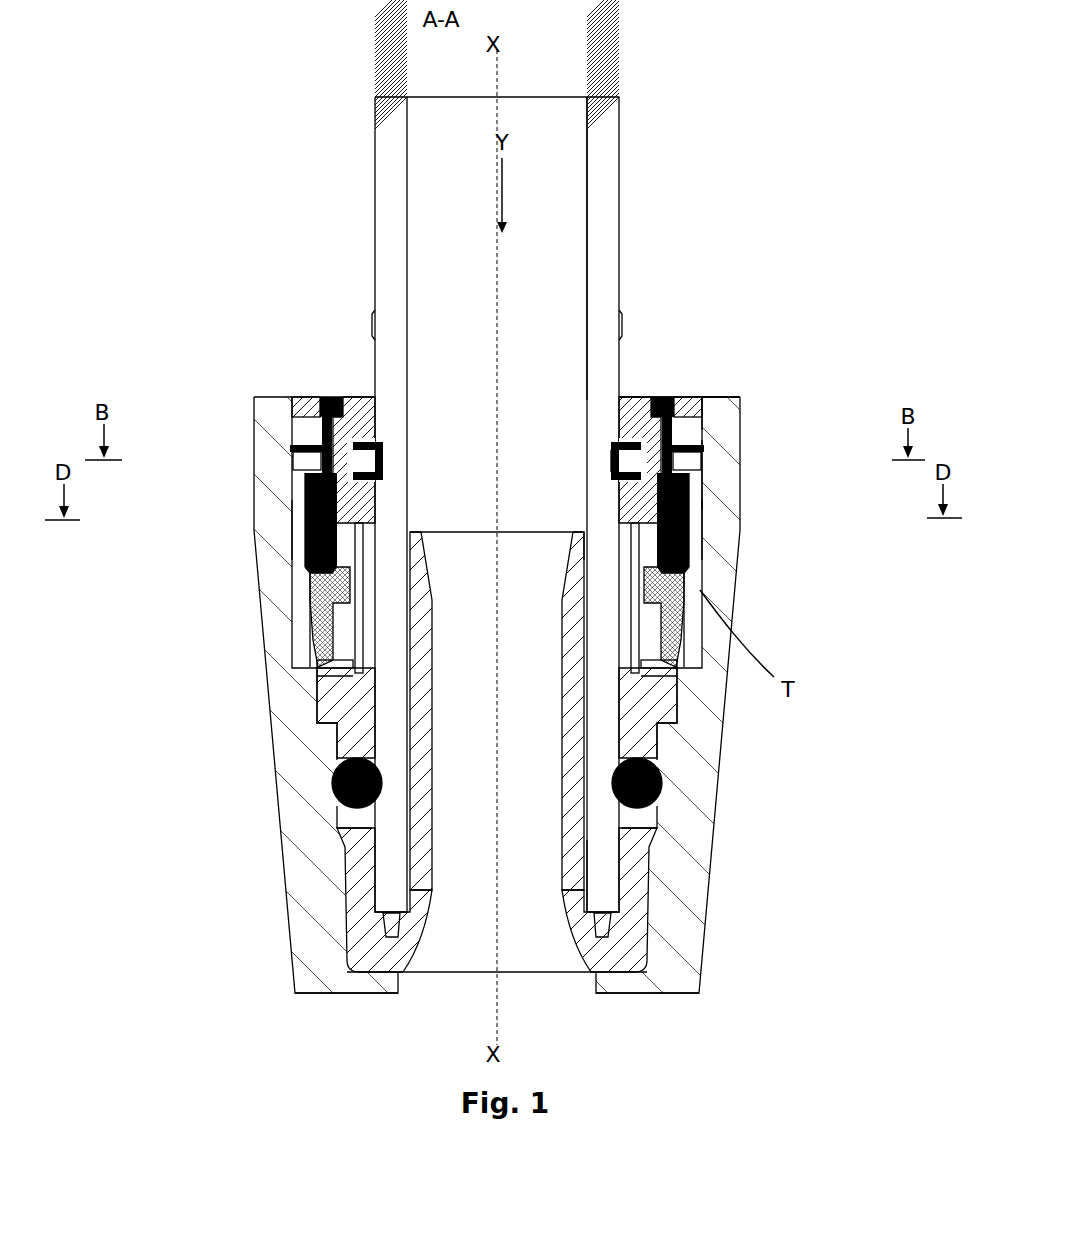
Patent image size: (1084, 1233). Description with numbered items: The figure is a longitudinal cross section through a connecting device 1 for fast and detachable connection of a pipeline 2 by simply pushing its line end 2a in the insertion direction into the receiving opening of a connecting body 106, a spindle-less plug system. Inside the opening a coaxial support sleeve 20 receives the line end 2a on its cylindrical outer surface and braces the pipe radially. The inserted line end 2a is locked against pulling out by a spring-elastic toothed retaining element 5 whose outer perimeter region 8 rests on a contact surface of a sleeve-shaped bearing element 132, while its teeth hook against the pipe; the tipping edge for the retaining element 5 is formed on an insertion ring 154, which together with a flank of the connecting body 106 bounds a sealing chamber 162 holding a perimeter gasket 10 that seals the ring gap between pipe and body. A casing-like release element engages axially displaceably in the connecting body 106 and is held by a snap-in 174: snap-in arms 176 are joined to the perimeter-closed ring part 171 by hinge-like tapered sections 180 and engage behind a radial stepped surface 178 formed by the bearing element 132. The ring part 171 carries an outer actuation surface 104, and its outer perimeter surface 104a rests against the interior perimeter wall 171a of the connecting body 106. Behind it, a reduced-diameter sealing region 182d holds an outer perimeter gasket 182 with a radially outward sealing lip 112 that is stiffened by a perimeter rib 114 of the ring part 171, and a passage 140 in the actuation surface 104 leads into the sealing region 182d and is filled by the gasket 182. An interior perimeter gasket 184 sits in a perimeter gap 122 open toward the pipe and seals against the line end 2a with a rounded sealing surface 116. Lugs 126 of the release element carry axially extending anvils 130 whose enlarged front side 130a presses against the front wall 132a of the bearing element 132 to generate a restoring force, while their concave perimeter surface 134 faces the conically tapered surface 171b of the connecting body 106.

The connecting device 1 is at (216, 225).
The pipeline 2 is at (597, 233).
The line end 2a is at (545, 885).
The retaining element 5 is at (545, 688).
The outer perimeter region 8 is at (723, 730).
The perimeter gasket 10 is at (560, 782).
The support sleeve 20 is at (545, 848).
The outer actuation surface 104 is at (651, 397).
The outer perimeter surface 104a is at (740, 397).
The connecting body 106 is at (307, 957).
The sealing lip 112 is at (700, 472).
The perimeter rib 114 is at (372, 412).
The sealing surface 116 is at (385, 457).
The perimeter gap 122 is at (652, 445).
The lugs 126 is at (302, 497).
The anvils 130 is at (303, 533).
The front side 130a is at (312, 580).
The bearing element 132 is at (325, 648).
The front wall 132a is at (352, 552).
The perimeter surface 134 is at (303, 560).
The passage 140 is at (317, 397).
The insertion ring 154 is at (335, 713).
The sealing chamber 162 is at (545, 751).
The ring part 171 is at (594, 357).
The interior perimeter wall 171a is at (700, 413).
The conically tapered surface 171b is at (700, 497).
The snap-in 174 is at (325, 610).
The snap-in arms 176 is at (320, 660).
The stepped surface 178 is at (600, 556).
The tapered sections 180 is at (385, 530).
The outer perimeter gasket 182 is at (300, 447).
The sealing region 182d is at (300, 432).
The interior perimeter gasket 184 is at (612, 457).